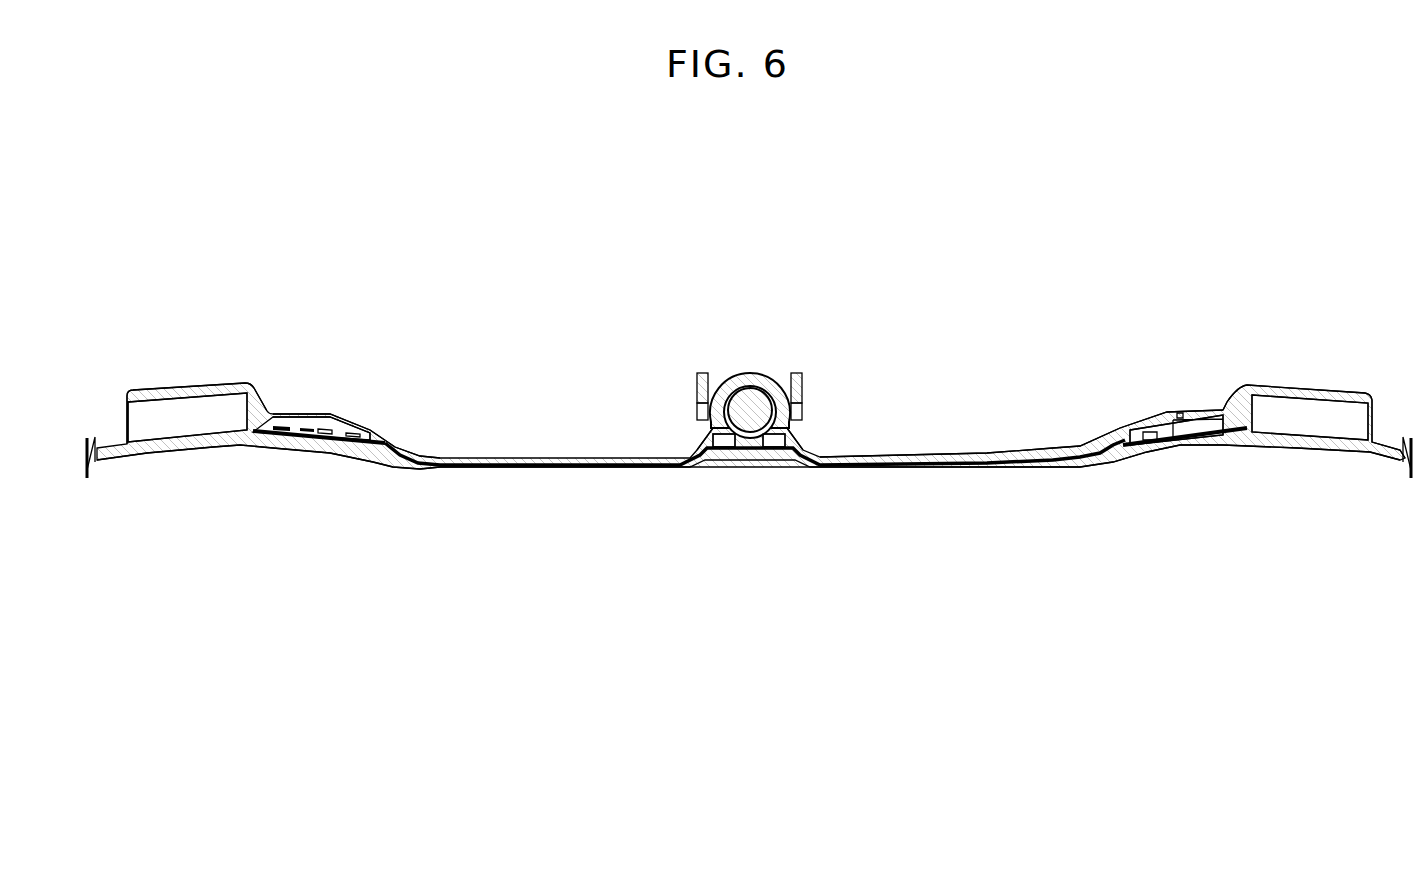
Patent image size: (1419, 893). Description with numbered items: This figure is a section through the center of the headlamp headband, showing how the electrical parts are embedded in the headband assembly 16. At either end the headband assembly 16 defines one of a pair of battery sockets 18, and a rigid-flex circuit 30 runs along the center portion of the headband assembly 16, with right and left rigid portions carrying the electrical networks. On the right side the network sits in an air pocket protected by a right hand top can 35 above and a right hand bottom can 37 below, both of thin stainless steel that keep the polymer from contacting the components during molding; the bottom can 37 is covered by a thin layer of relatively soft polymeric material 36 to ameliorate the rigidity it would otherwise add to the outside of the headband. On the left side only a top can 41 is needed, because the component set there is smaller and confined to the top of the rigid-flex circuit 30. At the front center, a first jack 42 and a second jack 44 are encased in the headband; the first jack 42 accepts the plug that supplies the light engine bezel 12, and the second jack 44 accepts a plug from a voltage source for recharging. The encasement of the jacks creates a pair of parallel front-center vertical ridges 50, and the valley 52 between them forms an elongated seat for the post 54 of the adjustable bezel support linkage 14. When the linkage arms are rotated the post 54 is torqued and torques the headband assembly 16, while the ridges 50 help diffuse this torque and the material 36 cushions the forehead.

The light engine bezel 12 is at (853, 355).
The adjustable bezel support linkage 14 is at (1097, 428).
The headband assembly 16 is at (1297, 385).
The battery socket 18 is at (190, 388).
The rigid-flex circuit 30 is at (500, 458).
The right hand top can 35 is at (1190, 412).
The soft polymeric material 36 is at (420, 450).
The right hand bottom can 37 is at (1172, 447).
The left hand top can 41 is at (333, 413).
The first jack 42 is at (724, 443).
The second jack 44 is at (776, 445).
The front-center vertical ridges 50 is at (700, 423).
The valley 52 is at (758, 447).
The post 54 is at (750, 405).